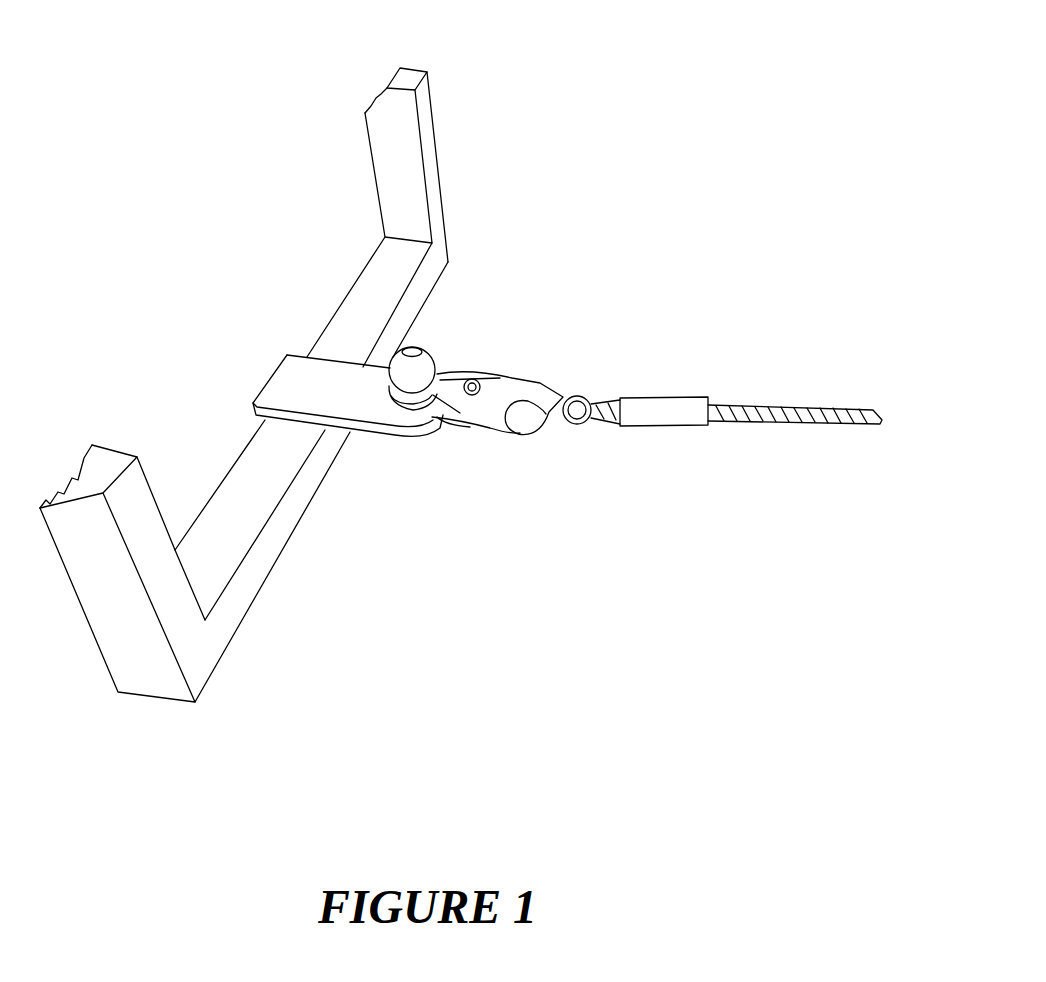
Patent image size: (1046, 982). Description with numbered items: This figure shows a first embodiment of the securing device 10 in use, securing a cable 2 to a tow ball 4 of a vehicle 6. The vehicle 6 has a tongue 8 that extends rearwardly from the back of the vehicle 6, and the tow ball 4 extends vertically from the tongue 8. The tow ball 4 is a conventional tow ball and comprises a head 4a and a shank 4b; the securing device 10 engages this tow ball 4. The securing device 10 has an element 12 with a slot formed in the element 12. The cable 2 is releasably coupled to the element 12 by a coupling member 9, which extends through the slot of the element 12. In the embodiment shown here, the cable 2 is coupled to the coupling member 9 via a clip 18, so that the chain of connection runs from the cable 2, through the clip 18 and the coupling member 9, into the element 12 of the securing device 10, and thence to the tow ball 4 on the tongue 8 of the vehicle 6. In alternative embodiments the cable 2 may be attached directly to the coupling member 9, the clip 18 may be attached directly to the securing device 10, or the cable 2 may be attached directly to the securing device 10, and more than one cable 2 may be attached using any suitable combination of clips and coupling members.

The cable 2 is at (770, 423).
The tow ball 4 is at (437, 361).
The head 4a is at (405, 348).
The shank 4b is at (435, 420).
The vehicle 6 is at (202, 657).
The tongue 8 is at (373, 412).
The coupling member 9 is at (497, 420).
The securing device 10 is at (478, 457).
The element 12 is at (483, 382).
The clip 18 is at (567, 389).